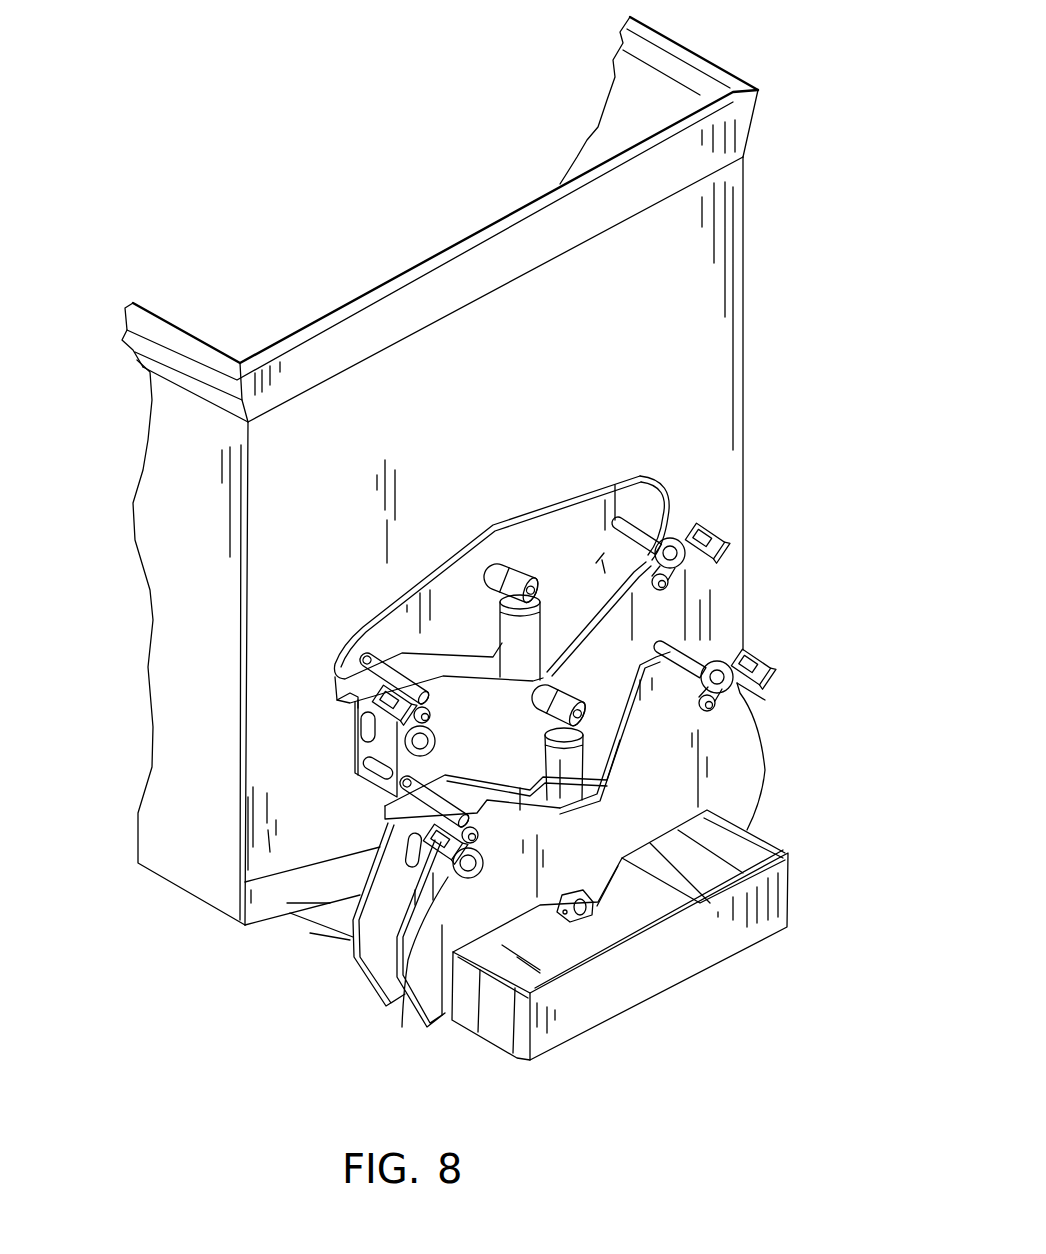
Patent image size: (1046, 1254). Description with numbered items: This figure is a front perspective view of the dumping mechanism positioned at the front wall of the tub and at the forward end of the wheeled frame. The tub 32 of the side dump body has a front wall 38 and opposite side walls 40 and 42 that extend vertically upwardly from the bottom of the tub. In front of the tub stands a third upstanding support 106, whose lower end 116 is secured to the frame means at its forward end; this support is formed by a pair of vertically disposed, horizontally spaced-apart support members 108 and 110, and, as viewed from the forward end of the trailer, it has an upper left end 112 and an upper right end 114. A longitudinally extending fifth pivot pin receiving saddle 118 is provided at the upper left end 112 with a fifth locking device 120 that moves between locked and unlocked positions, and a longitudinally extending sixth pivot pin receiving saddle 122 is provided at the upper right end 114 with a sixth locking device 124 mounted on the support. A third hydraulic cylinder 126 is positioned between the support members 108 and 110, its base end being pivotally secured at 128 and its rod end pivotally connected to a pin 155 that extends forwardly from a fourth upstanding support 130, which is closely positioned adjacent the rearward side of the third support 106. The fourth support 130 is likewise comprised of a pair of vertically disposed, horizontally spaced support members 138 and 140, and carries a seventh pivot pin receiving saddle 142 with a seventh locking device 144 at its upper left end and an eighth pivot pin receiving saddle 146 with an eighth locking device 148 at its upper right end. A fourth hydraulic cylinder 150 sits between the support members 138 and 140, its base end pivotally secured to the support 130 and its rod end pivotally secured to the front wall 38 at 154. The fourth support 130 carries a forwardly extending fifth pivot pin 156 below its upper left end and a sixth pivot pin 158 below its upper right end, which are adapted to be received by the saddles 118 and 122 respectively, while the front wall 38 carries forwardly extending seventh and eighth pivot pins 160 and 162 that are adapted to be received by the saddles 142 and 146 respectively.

The tub 32 is at (394, 242).
The front wall 38 is at (522, 393).
The side wall 40 is at (650, 122).
The side wall 42 is at (192, 553).
The third upstanding support 106 is at (748, 772).
The support member 108 is at (604, 857).
The support member 110 is at (372, 970).
The upper left end 112 is at (383, 820).
The upper right end 114 is at (757, 708).
The lower end 116 is at (450, 1020).
The fifth pivot pin receiving saddle 118 is at (397, 822).
The fifth locking device 120 is at (408, 960).
The sixth pivot pin receiving saddle 122 is at (668, 652).
The sixth locking device 124 is at (733, 657).
The third hydraulic cylinder 126 is at (590, 790).
The base end pivot connection 128 is at (595, 900).
The fourth upstanding support 130 is at (675, 603).
The support member 138 is at (616, 673).
The support member 140 is at (598, 563).
The seventh pivot pin receiving saddle 142 is at (333, 683).
The seventh locking device 144 is at (405, 741).
The eighth pivot pin receiving saddle 146 is at (657, 483).
The eighth locking device 148 is at (675, 512).
The fourth hydraulic cylinder 150 is at (500, 625).
The rod end pivot connection 154 is at (548, 578).
The pin 155 is at (545, 718).
The fifth pivot pin 156 is at (516, 866).
The sixth pivot pin 158 is at (727, 633).
The seventh pivot pin 160 is at (383, 666).
The eighth pivot pin 162 is at (660, 507).